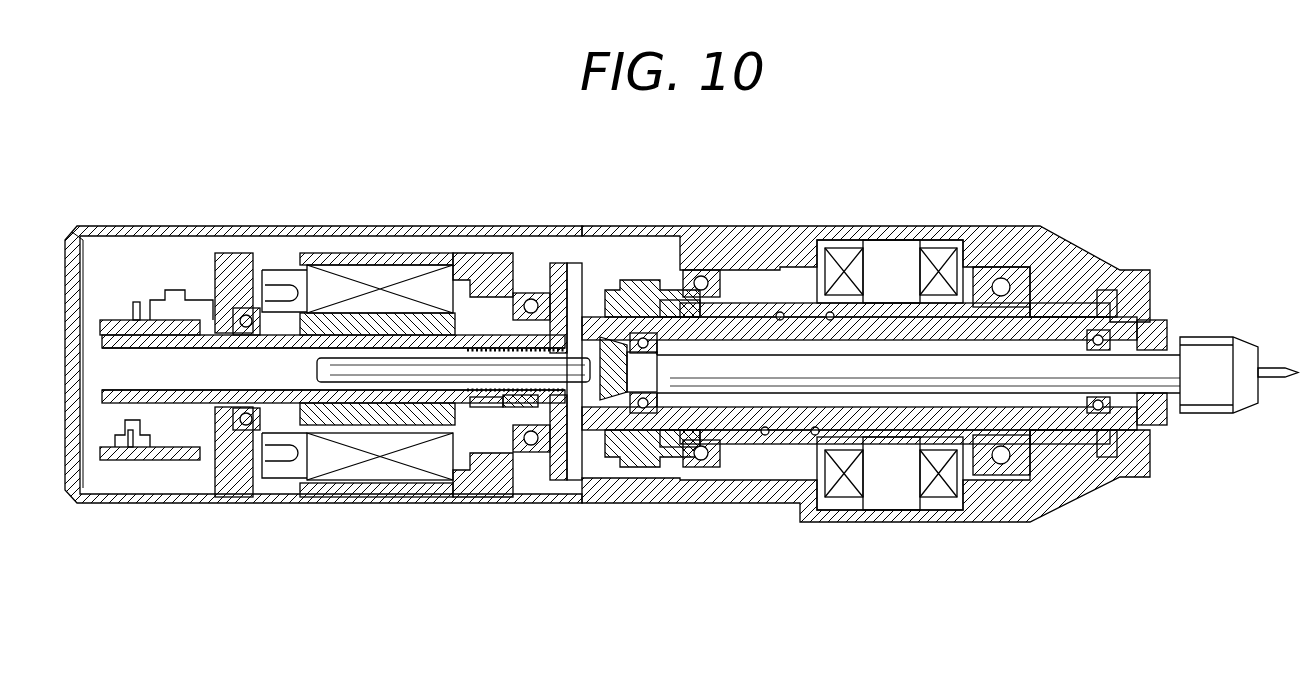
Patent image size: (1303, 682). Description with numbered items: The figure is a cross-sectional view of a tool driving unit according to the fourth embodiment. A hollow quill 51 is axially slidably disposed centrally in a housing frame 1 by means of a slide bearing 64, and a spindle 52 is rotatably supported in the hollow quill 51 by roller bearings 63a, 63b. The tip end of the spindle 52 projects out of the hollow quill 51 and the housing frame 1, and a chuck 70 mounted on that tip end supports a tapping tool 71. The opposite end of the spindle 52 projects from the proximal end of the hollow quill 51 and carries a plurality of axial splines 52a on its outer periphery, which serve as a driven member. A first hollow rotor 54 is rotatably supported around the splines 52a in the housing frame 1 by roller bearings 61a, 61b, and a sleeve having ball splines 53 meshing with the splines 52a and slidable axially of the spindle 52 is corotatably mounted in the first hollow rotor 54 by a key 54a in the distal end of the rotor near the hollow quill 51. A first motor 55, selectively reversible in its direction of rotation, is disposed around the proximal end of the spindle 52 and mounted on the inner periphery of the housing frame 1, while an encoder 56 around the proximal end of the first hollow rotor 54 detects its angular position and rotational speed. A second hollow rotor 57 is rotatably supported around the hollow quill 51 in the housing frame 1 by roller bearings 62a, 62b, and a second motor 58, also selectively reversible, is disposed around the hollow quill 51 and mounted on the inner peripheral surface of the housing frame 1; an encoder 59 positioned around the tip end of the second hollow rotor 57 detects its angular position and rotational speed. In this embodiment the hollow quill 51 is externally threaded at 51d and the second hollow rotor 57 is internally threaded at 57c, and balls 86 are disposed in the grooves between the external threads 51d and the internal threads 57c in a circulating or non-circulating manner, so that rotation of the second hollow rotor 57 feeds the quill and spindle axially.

The housing frame 1 is at (927, 236).
The encoder 56 is at (152, 322).
The roller bearing 61a is at (240, 310).
The first motor 55 is at (338, 290).
The first hollow rotor 54 is at (345, 397).
The ball splines 53 is at (488, 402).
The key 54a is at (515, 400).
The roller bearing 61b is at (556, 270).
The axial splines 52a is at (572, 372).
The encoder 59 is at (613, 292).
The internal threads 57c is at (650, 318).
The roller bearing 62a is at (700, 475).
The balls 86 is at (760, 440).
The spindle 52 is at (790, 380).
The roller bearing 63a is at (650, 415).
The external threads 51d is at (822, 262).
The second motor 58 is at (890, 258).
The second hollow rotor 57 is at (965, 278).
The roller bearing 62b is at (990, 475).
The hollow quill 51 is at (1065, 322).
The slide bearing 64 is at (1097, 302).
The roller bearing 63b is at (1100, 415).
The chuck 70 is at (1210, 352).
The tapping tool 71 is at (1277, 366).